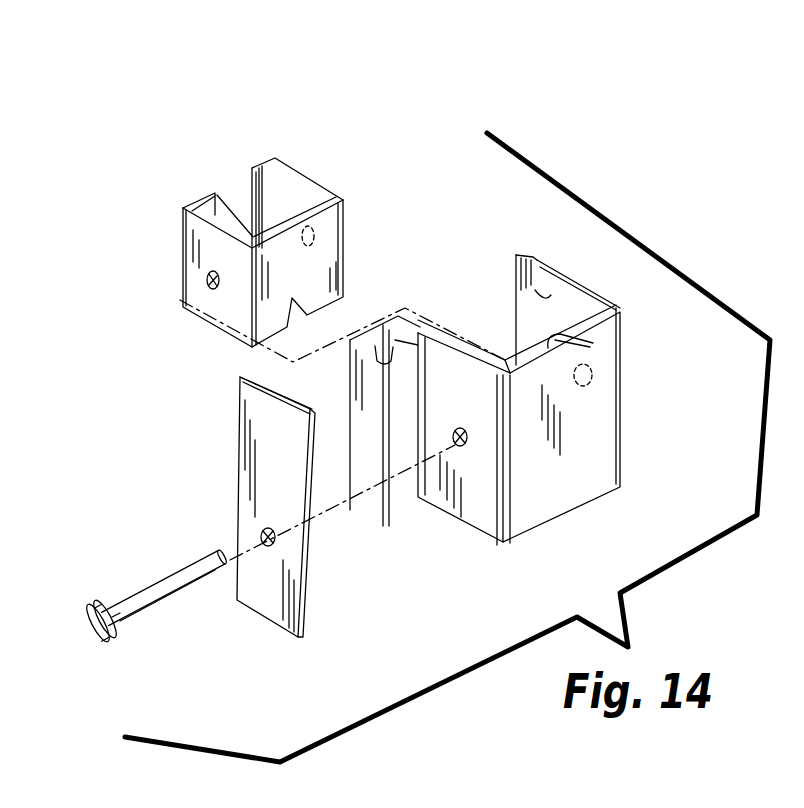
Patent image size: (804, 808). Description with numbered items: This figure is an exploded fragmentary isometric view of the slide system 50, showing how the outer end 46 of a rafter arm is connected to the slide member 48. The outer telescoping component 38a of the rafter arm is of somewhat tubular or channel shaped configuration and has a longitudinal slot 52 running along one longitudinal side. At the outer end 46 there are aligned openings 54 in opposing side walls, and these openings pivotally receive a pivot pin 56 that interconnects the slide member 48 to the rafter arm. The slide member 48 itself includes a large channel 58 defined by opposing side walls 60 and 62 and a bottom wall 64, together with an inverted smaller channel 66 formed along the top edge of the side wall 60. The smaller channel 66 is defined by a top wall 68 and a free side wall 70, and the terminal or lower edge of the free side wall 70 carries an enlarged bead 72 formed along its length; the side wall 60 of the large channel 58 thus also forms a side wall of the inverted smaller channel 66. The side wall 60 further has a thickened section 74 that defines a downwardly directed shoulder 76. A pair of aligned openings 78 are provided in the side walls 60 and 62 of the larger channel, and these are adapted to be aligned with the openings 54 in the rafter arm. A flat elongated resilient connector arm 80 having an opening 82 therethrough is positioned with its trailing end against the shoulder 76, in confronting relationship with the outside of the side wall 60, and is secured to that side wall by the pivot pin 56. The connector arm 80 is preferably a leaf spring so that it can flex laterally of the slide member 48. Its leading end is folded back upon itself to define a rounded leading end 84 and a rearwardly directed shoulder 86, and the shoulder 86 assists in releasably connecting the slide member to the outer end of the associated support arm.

The outer telescoping component 38a is at (318, 183).
The outer end 46 is at (318, 183).
The slide member 48 is at (513, 257).
The slide system 50 is at (98, 443).
The longitudinal slot 52 is at (252, 192).
The aligned openings 54 is at (207, 283).
The pivot pin 56 is at (163, 580).
The large channel 58 is at (570, 320).
The side wall 60 is at (473, 340).
The side wall 62 is at (537, 260).
The bottom wall 64 is at (590, 336).
The inverted smaller channel 66 is at (403, 500).
The top wall 68 is at (387, 323).
The free side wall 70 is at (358, 400).
The enlarged bead 72 is at (387, 360).
The thickened section 74 is at (407, 340).
The shoulder 76 is at (455, 440).
The aligned openings 78 is at (593, 378).
The connector arm 80 is at (258, 443).
The opening 82 is at (278, 547).
The rounded leading end 84 is at (253, 377).
The rearwardly directed shoulder 86 is at (312, 443).